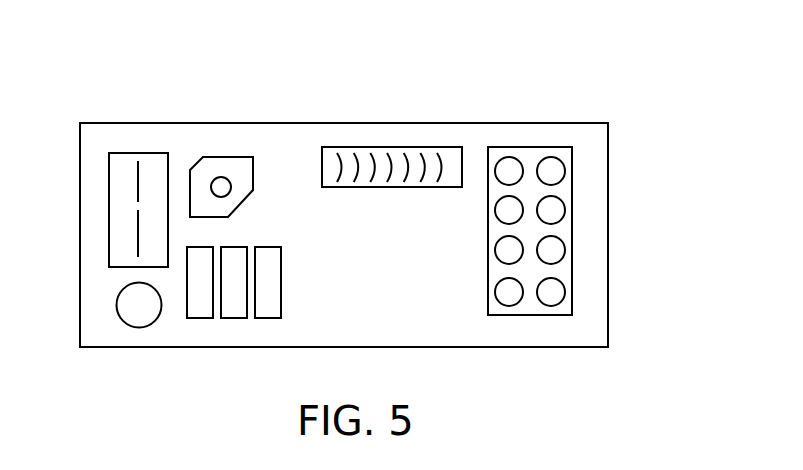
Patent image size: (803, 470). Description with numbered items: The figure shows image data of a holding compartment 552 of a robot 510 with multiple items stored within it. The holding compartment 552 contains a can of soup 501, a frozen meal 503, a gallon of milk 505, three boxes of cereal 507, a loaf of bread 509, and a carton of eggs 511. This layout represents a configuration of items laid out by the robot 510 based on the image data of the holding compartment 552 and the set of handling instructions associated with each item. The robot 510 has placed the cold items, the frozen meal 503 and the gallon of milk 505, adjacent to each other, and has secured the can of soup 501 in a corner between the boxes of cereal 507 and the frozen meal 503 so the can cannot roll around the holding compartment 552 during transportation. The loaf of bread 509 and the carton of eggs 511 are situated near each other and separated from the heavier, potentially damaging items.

The can of soup 501 is at (117, 307).
The frozen meal 503 is at (110, 213).
The gallon of milk 505 is at (253, 190).
The boxes of cereal 507 is at (282, 273).
The loaf of bread 509 is at (400, 187).
The robot 510 is at (673, 113).
The carton of eggs 511 is at (488, 282).
The holding compartment 552 is at (608, 233).